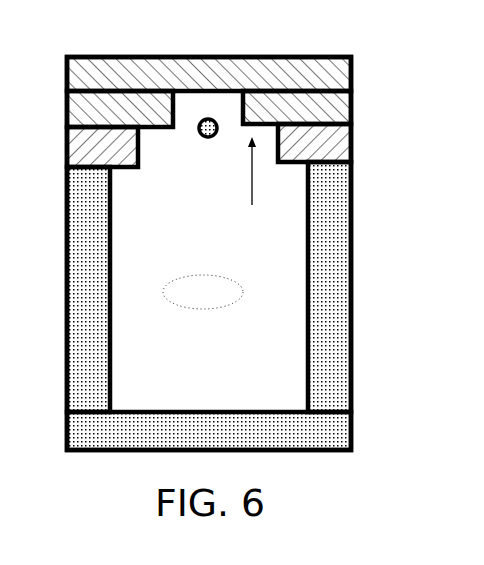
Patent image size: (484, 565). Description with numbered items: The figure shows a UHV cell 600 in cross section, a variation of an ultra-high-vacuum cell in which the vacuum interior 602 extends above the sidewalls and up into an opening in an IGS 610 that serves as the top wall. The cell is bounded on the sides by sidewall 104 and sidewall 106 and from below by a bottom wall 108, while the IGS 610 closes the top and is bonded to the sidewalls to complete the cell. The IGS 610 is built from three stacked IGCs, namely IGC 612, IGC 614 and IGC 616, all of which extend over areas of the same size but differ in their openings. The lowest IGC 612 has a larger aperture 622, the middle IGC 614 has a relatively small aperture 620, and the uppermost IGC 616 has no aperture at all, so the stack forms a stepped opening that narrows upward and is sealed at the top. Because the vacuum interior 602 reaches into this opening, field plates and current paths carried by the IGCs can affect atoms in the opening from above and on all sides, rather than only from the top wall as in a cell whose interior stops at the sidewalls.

The UHV cell 600 is at (255, 32).
The vacuum interior 602 is at (226, 301).
The sidewall 104 is at (65, 250).
The sidewall 106 is at (353, 276).
The bottom wall 108 is at (227, 443).
The IGS 610 is at (267, 72).
The IGC 612 is at (258, 145).
The IGC 614 is at (137, 121).
The IGC 616 is at (225, 82).
The aperture 620 is at (185, 133).
The aperture 622 is at (249, 187).